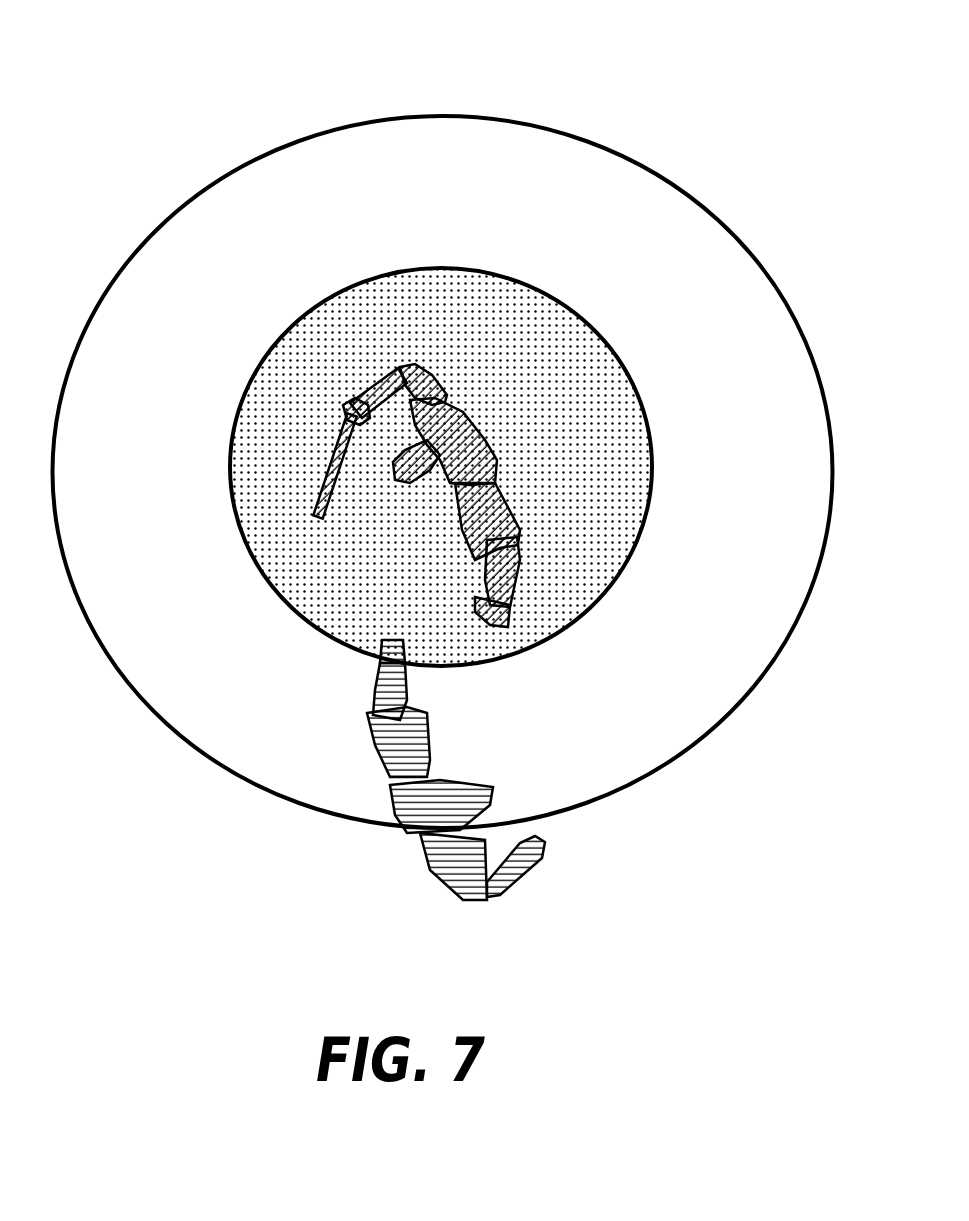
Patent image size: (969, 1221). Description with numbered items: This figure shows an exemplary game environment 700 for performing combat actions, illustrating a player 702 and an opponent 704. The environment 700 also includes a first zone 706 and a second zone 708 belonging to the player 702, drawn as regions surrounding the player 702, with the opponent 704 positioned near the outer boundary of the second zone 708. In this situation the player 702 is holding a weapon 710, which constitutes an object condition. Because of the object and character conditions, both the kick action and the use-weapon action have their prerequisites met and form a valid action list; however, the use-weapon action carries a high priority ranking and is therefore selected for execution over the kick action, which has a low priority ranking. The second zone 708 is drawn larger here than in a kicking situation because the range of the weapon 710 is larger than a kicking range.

The environment 700 is at (103, 97).
The player 702 is at (460, 389).
The opponent 704 is at (520, 890).
The first zone 706 is at (370, 363).
The second zone 708 is at (706, 257).
The weapon 710 is at (323, 473).